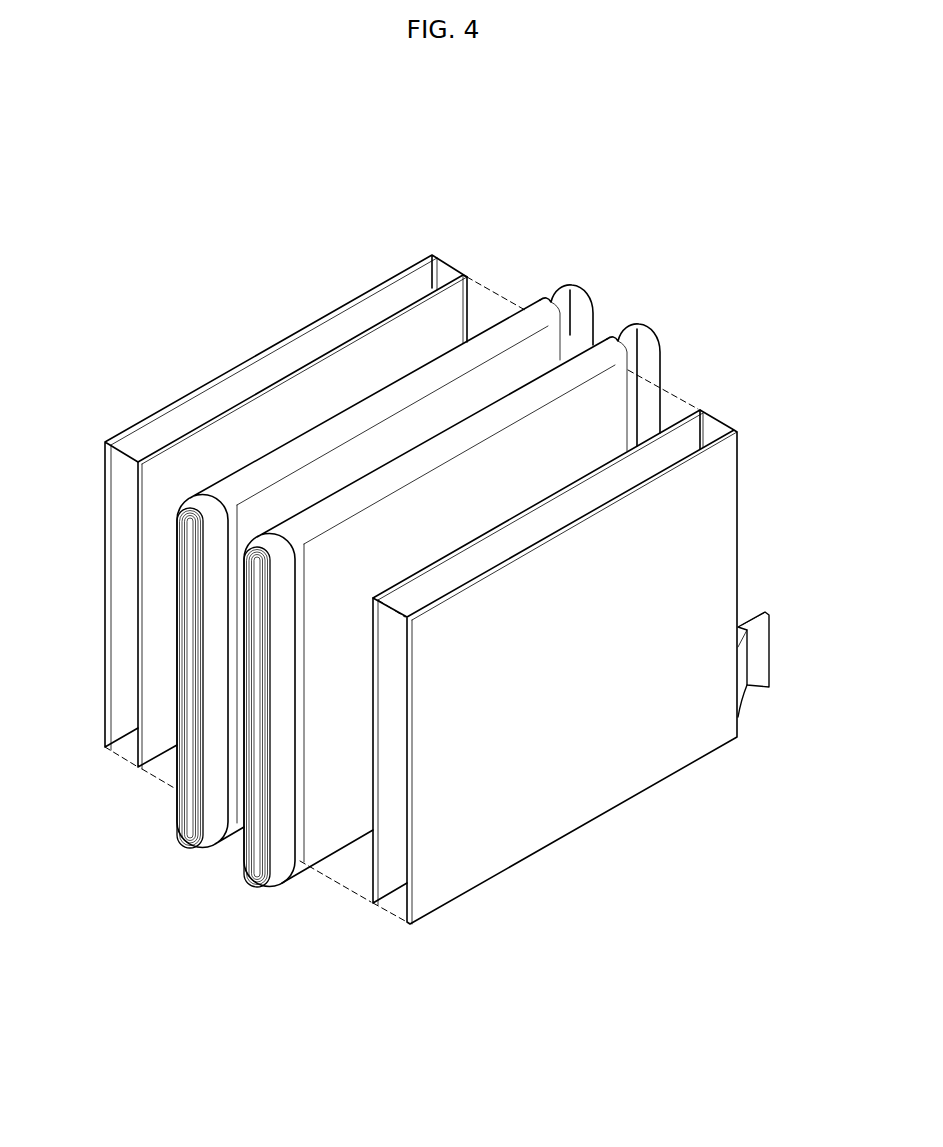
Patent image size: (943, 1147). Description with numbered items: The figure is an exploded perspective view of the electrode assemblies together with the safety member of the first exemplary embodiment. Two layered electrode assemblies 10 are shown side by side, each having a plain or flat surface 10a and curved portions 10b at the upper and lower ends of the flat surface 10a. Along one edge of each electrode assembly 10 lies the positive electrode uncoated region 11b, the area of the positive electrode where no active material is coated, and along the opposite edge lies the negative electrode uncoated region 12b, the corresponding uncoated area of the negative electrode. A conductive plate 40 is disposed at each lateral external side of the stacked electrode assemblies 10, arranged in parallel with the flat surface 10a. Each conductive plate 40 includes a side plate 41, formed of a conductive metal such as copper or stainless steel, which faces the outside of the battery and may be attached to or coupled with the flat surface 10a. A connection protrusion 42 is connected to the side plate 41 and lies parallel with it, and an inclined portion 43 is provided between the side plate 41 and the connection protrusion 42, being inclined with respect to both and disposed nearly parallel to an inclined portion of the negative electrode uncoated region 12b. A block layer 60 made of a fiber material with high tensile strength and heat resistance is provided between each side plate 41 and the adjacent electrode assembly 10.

The electrode assembly 10 is at (372, 593).
The flat surface 10a is at (330, 793).
The curved portion 10b is at (329, 858).
The positive electrode uncoated region 11b is at (197, 507).
The negative electrode uncoated region 12b is at (573, 288).
The conductive plate 40 is at (470, 588).
The side plate 41 is at (623, 767).
The connection protrusion 42 is at (760, 656).
The inclined portion 43 is at (742, 685).
The block layer 60 is at (232, 410).